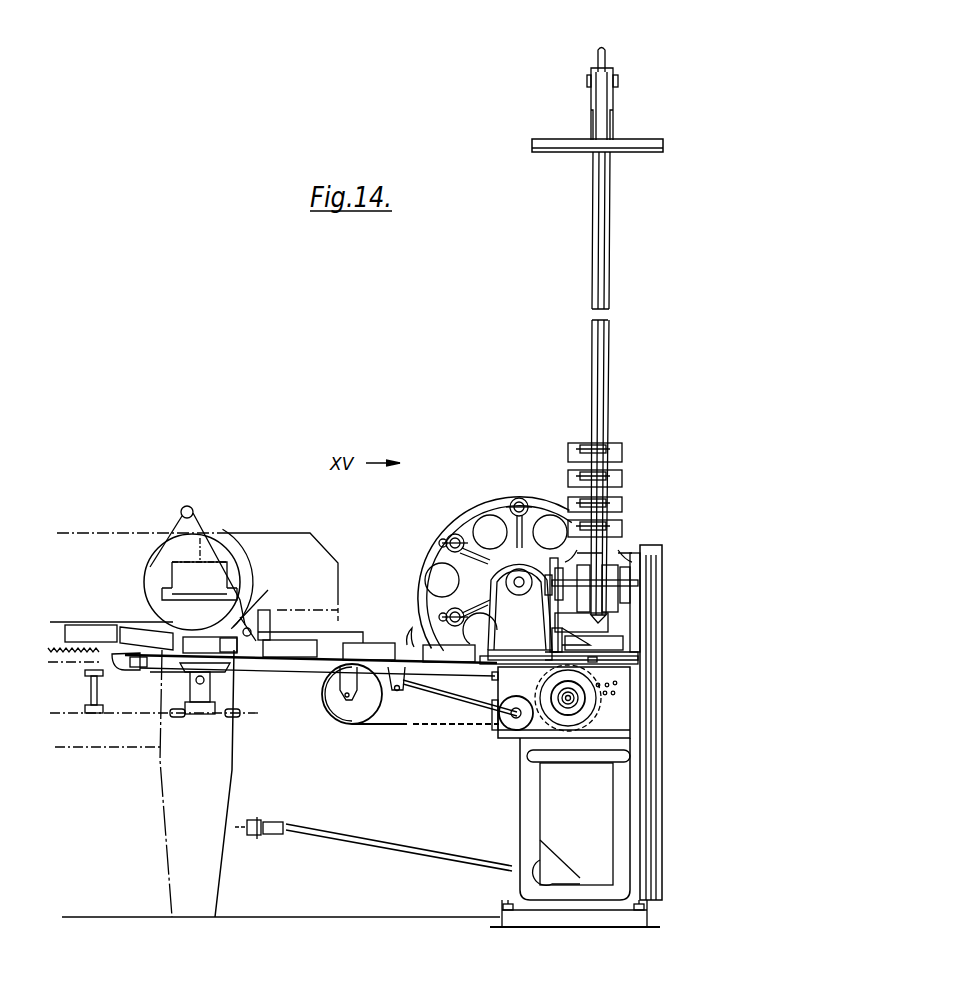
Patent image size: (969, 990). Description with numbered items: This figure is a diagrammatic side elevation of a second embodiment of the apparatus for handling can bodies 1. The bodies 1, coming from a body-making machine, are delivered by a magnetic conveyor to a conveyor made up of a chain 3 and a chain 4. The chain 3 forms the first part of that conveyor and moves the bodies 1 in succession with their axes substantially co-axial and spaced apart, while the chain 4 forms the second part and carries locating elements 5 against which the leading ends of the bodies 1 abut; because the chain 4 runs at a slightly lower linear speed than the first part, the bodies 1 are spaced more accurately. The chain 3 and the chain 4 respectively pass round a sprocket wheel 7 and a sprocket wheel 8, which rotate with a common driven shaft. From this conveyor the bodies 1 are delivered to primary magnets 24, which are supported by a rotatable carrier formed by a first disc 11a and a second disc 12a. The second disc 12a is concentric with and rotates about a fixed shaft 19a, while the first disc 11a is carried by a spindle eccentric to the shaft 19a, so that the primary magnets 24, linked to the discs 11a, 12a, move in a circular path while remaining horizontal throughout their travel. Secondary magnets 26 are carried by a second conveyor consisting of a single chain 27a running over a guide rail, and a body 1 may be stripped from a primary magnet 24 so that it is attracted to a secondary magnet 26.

The can body 1 is at (618, 458).
The chain 3 is at (297, 672).
The chain 4 is at (423, 727).
The locating element 5 is at (322, 712).
The sprocket wheel 7 is at (538, 682).
The sprocket wheel 8 is at (600, 702).
The first disc 11a is at (452, 518).
The second disc 12a is at (490, 506).
The fixed shaft 19a is at (522, 594).
The primary magnet 24 is at (523, 504).
The secondary magnet 26 is at (590, 447).
The chain 27a is at (601, 386).